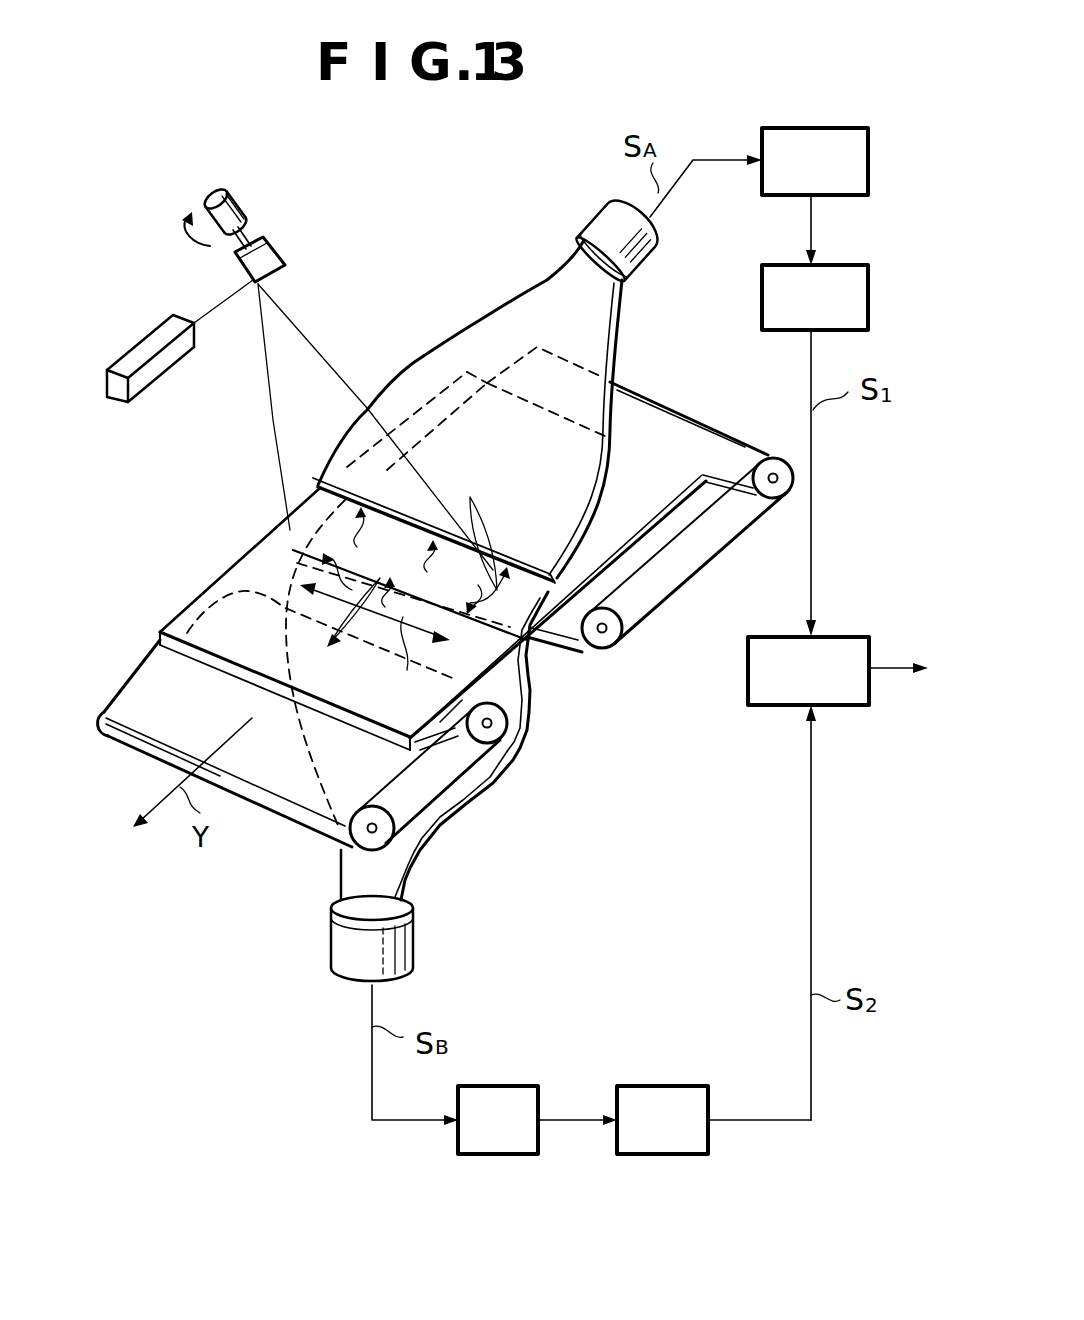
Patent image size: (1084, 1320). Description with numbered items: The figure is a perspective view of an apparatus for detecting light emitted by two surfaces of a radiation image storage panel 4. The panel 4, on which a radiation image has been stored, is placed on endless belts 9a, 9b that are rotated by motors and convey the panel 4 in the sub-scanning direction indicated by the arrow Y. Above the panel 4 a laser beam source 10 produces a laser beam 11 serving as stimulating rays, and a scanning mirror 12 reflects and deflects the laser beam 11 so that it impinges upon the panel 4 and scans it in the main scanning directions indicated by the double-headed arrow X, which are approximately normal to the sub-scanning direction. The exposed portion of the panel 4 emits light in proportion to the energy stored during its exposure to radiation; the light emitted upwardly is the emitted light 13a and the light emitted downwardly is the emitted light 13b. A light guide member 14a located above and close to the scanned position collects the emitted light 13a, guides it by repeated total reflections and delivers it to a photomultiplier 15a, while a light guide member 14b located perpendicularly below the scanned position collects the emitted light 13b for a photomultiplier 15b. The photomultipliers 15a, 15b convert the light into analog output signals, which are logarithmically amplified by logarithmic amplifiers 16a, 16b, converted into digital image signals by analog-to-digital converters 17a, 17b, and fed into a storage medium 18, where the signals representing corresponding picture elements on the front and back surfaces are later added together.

The radiation image storage panel 4 is at (257, 577).
The endless belt 9a is at (677, 593).
The endless belt 9b is at (143, 692).
The laser beam source 10 is at (157, 333).
The laser beam 11 is at (323, 357).
The scanning mirror 12 is at (290, 267).
The emitted light 13a is at (350, 527).
The emitted light 13b is at (330, 645).
The light guide member 14a is at (482, 320).
The light guide member 14b is at (533, 733).
The photomultiplier 15a is at (593, 213).
The photomultiplier 15b is at (408, 958).
The logarithmic amplifier 16a is at (830, 127).
The logarithmic amplifier 16b is at (527, 1080).
The analog-to-digital converter 17a is at (848, 260).
The analog-to-digital converter 17b is at (688, 1080).
The storage medium 18 is at (850, 633).